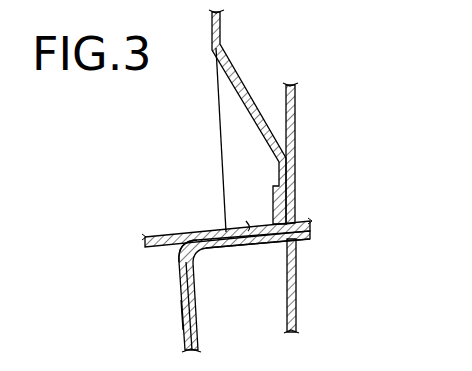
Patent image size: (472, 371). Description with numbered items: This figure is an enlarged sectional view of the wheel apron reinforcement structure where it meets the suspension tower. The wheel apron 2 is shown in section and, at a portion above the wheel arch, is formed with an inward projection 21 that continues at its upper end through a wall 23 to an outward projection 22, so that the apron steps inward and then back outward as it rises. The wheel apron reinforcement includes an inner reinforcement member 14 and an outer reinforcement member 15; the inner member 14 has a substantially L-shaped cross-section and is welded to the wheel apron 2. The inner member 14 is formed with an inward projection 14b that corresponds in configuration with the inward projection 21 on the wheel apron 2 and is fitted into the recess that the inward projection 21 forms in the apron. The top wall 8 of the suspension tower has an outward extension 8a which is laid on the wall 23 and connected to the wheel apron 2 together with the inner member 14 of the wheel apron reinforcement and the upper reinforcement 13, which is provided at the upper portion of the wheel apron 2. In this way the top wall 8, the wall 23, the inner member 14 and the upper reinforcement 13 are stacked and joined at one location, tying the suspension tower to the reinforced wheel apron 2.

The wheel apron 2 is at (178, 316).
The top wall 8 is at (167, 247).
The outward extension 8a is at (246, 221).
The upper reinforcement 13 is at (296, 132).
The inner reinforcement member 14 is at (205, 335).
The inward projection 14b is at (200, 307).
The outer reinforcement member 15 is at (296, 297).
The inward projection 21 is at (181, 270).
The outward projection 22 is at (240, 138).
The wall 23 is at (237, 254).